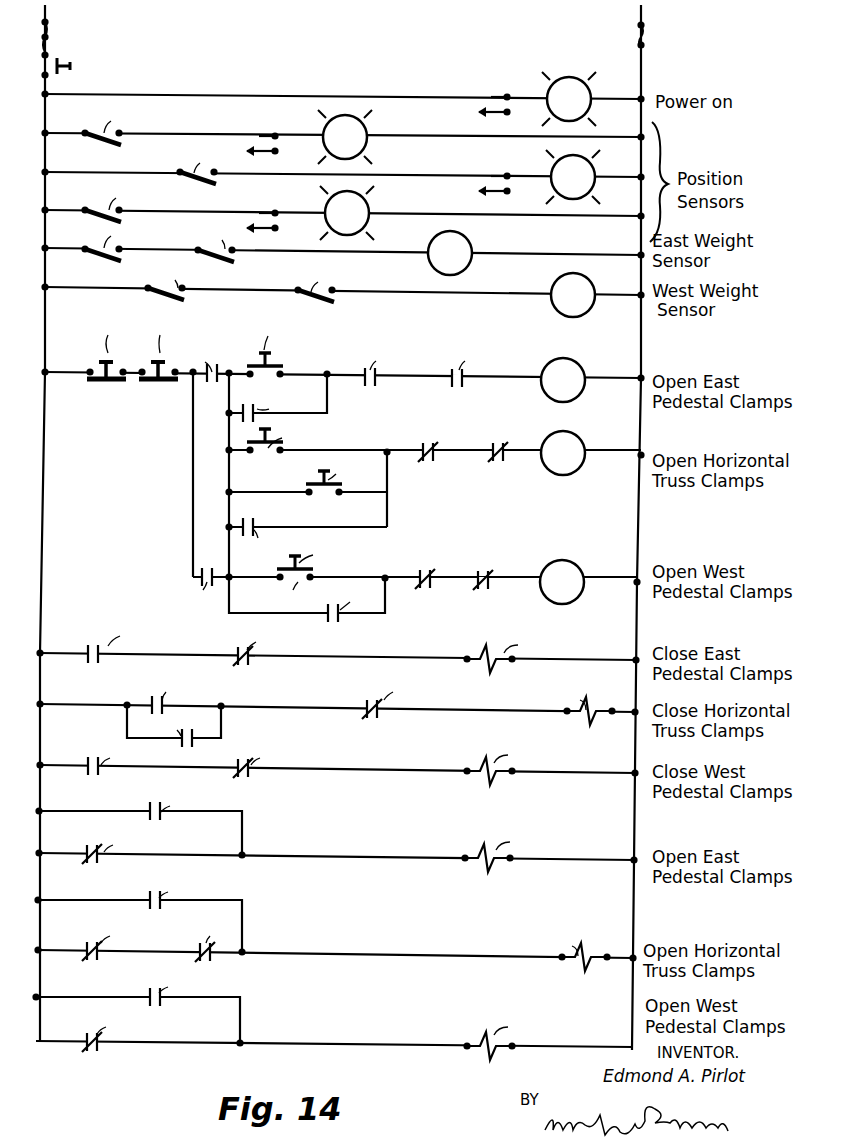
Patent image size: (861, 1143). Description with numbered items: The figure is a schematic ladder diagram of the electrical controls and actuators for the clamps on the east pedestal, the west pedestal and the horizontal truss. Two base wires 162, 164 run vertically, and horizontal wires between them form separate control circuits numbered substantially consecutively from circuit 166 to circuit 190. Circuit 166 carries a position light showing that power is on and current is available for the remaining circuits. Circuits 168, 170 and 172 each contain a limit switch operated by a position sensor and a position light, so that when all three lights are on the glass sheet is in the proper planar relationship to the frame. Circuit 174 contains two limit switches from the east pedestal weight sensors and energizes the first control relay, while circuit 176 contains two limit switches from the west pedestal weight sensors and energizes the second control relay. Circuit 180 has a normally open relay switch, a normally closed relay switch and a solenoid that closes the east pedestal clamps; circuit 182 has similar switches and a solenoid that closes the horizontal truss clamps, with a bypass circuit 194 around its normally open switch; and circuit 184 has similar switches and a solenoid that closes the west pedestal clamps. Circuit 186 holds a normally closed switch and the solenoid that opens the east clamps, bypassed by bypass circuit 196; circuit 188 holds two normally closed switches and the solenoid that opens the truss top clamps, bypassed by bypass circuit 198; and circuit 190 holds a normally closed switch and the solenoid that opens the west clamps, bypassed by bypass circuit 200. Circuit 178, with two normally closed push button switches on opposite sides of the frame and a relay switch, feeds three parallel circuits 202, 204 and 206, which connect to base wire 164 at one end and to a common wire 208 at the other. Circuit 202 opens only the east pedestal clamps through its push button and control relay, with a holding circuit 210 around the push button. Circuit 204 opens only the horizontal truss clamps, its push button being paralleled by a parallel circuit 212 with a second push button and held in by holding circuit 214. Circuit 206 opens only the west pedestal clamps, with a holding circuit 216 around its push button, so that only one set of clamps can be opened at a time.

The base wire 162 is at (45, 12).
The base wire 164 is at (641, 14).
The circuit 166 is at (66, 94).
The circuit 168 is at (58, 132).
The circuit 170 is at (58, 171).
The circuit 172 is at (58, 209).
The circuit 174 is at (58, 247).
The circuit 176 is at (58, 287).
The circuit 178 is at (342, 446).
The circuit 180 is at (61, 653).
The circuit 182 is at (337, 710).
The circuit 184 is at (57, 765).
The circuit 186 is at (336, 830).
The circuit 188 is at (335, 922).
The circuit 190 is at (332, 1014).
The bypass circuit 194 is at (222, 733).
The bypass circuit 196 is at (243, 832).
The bypass circuit 198 is at (243, 922).
The bypass circuit 200 is at (242, 1014).
The circuit 202 is at (514, 372).
The circuit 204 is at (486, 454).
The circuit 206 is at (444, 577).
The common wire 208 is at (229, 425).
The holding circuit 210 is at (330, 400).
The parallel circuit 212 is at (298, 495).
The holding circuit 214 is at (326, 528).
The holding circuit 216 is at (345, 615).